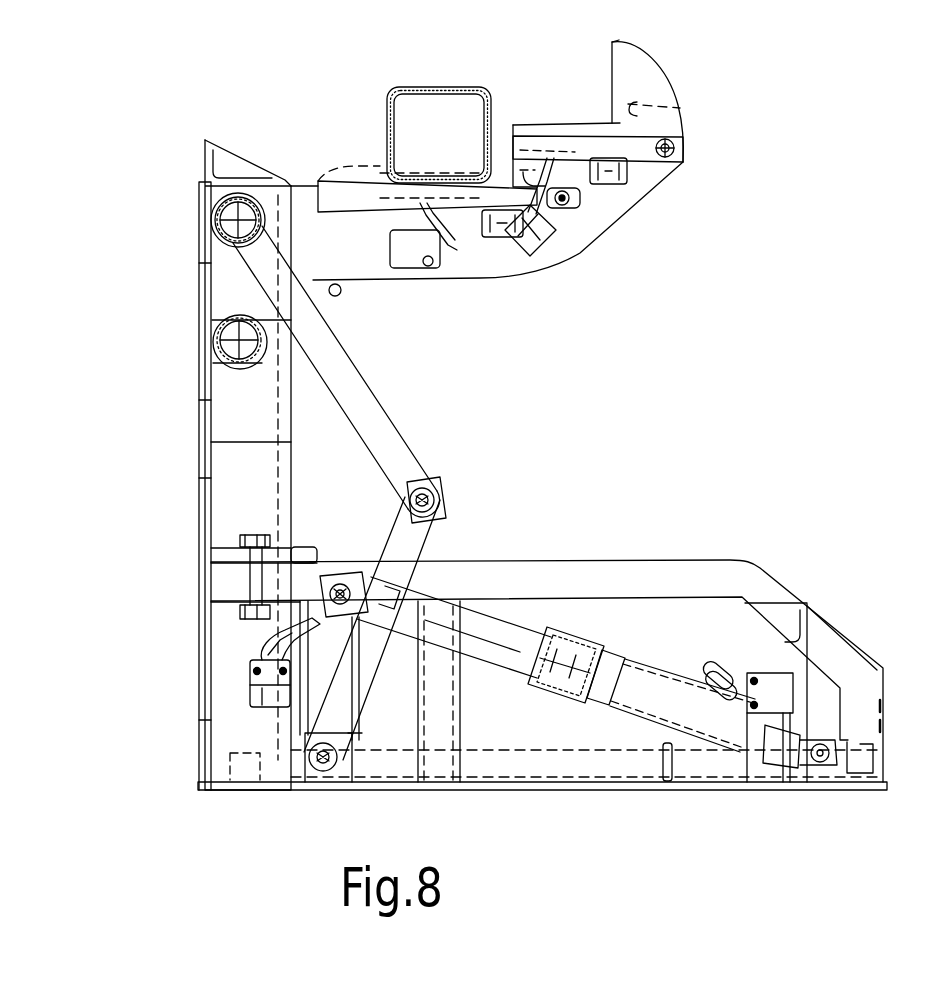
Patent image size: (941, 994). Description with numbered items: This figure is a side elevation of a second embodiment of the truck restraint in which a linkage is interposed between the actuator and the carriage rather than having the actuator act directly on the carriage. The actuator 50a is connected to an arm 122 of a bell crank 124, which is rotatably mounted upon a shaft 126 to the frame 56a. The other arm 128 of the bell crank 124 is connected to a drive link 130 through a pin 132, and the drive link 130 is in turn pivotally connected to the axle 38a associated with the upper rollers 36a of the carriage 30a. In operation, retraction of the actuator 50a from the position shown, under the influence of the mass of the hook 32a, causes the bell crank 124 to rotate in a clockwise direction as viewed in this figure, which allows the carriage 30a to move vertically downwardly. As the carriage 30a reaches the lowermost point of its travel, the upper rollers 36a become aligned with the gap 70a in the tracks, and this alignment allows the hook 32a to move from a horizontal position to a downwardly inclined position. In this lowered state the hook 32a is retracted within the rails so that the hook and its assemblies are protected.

The carriage 30a is at (234, 292).
The axle 38a is at (215, 205).
The upper rollers 36a is at (222, 228).
The hook 32a is at (580, 258).
The drive link 130 is at (372, 393).
The pin 132 is at (430, 483).
The other arm 128 is at (412, 537).
The bell crank 124 is at (375, 708).
The shaft 126 is at (323, 770).
The actuator 50a is at (641, 663).
The gap 70a is at (280, 585).
The arm 122 is at (273, 633).
The frame 56a is at (543, 767).